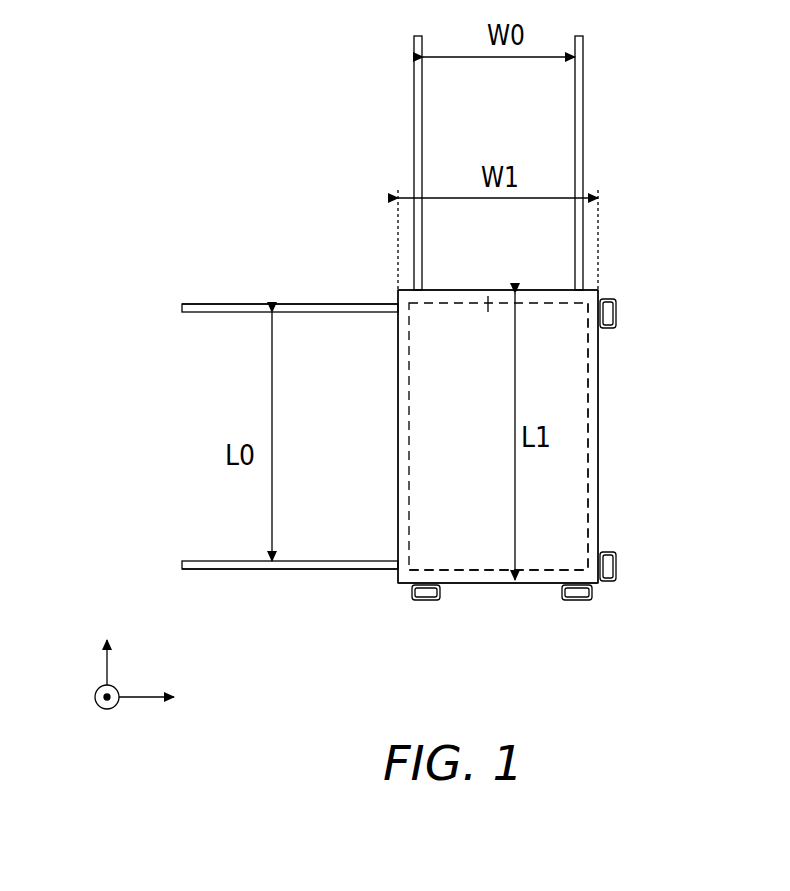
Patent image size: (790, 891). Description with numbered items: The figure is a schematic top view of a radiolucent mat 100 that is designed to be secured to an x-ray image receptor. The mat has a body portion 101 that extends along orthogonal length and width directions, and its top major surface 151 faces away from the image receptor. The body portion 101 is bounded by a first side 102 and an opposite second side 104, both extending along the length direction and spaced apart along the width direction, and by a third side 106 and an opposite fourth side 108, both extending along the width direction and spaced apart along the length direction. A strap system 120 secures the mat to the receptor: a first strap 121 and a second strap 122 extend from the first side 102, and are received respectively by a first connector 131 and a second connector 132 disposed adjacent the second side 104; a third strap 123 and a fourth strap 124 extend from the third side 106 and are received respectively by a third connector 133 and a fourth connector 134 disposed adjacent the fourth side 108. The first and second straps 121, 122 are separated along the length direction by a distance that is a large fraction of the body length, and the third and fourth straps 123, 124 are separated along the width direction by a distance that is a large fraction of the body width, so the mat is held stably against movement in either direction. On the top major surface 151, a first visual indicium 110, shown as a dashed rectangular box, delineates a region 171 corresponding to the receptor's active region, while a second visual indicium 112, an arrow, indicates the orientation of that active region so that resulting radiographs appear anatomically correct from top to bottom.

The radiolucent mat 100 is at (163, 141).
The body portion 101 is at (547, 497).
The first side 102 is at (398, 419).
The second side 104 is at (596, 440).
The third side 106 is at (552, 297).
The fourth side 108 is at (542, 585).
The first visual indicia 110 is at (455, 583).
The second visual indicia 112 is at (488, 300).
The strap system 120 is at (217, 300).
The first strap 121 is at (337, 303).
The second strap 122 is at (250, 570).
The third strap 123 is at (414, 170).
The fourth strap 124 is at (583, 100).
The first connector 131 is at (613, 297).
The second connector 132 is at (618, 572).
The third connector 133 is at (412, 592).
The fourth connector 134 is at (580, 602).
The top major surface 151 is at (568, 378).
The region 171 is at (556, 542).